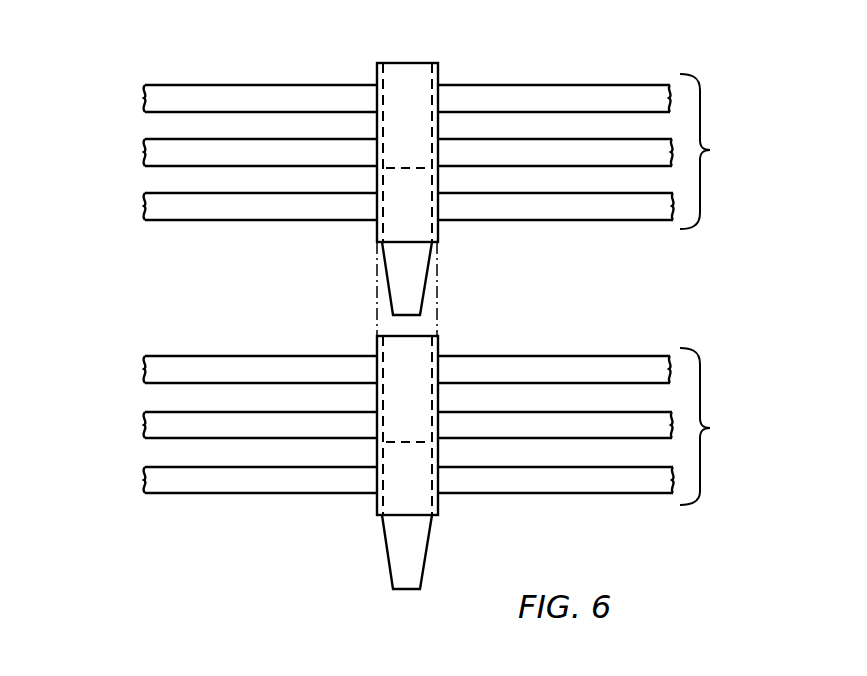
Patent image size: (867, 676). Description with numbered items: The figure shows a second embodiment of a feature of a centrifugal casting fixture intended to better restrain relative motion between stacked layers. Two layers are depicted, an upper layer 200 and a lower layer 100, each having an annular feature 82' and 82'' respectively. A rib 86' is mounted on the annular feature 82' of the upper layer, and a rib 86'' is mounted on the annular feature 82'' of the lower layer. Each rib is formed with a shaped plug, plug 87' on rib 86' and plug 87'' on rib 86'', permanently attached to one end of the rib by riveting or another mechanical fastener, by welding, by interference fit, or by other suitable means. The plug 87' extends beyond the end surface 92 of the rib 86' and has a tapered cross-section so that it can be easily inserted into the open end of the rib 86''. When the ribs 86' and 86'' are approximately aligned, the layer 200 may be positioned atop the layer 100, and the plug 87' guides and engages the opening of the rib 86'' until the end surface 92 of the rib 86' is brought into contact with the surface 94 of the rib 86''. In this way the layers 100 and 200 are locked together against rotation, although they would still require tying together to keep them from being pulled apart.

The annular feature 82' is at (355, 152).
The annular feature 82'' is at (353, 424).
The rib 86' is at (453, 133).
The rib 86'' is at (455, 404).
The shaped plug 87' is at (367, 278).
The shaped plug 87'' is at (365, 552).
The end surface 92 is at (433, 247).
The surface 94 is at (393, 336).
The layer 200 is at (710, 150).
The layer 100 is at (710, 428).